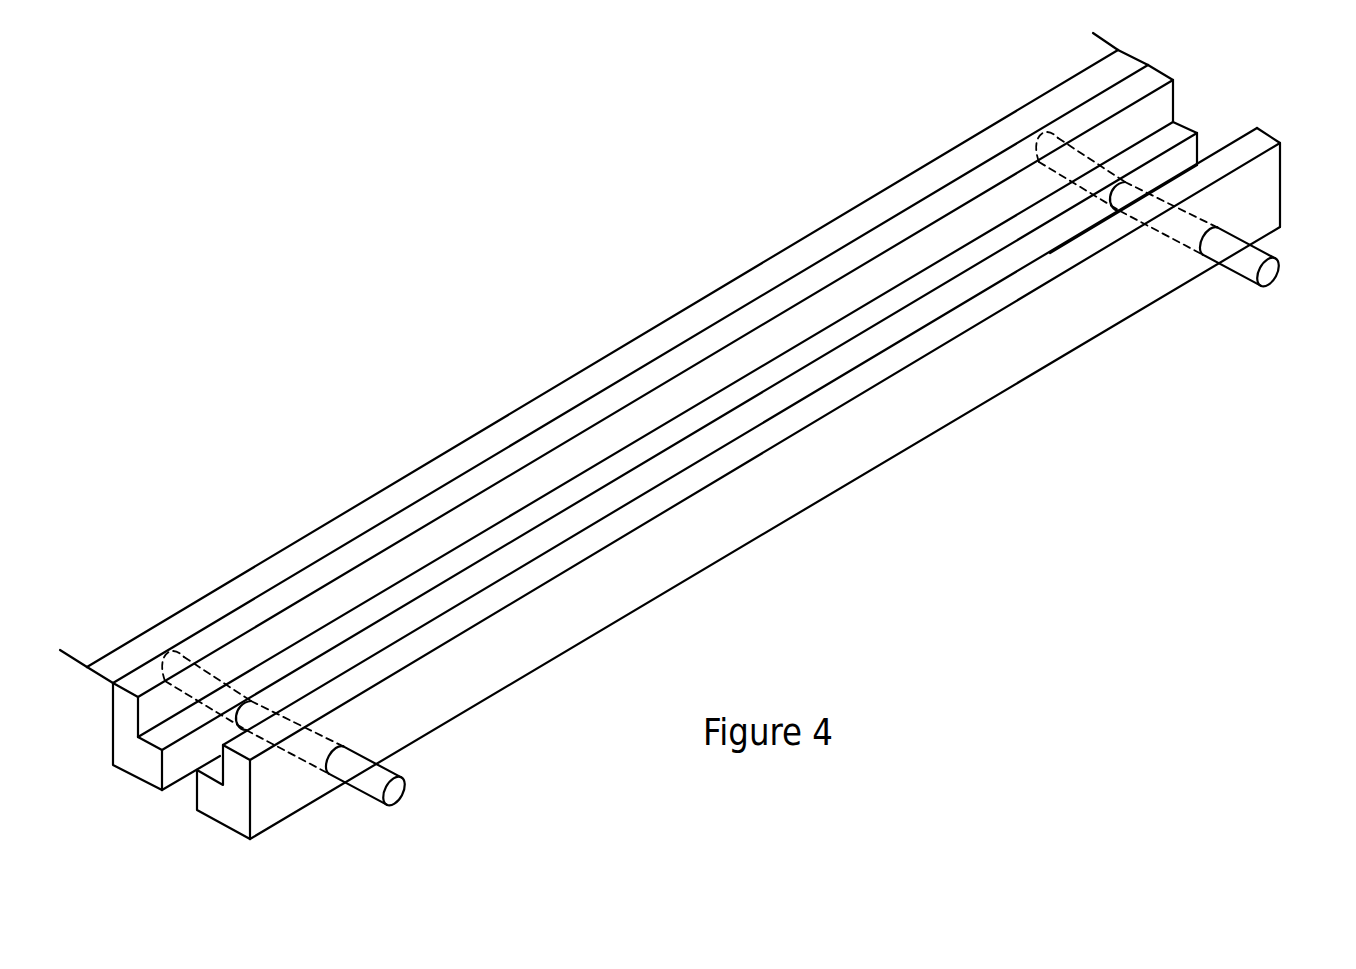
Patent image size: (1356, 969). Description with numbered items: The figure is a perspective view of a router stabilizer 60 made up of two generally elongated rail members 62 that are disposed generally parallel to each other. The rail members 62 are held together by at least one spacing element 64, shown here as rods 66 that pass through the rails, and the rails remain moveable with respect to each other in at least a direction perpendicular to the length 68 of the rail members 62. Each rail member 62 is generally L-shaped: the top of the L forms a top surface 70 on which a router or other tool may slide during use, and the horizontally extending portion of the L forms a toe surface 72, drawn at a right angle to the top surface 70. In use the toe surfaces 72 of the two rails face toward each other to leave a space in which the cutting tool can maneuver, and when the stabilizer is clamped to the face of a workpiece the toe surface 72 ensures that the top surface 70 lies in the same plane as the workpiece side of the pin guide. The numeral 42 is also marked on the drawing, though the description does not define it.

The shelf surface 42 is at (313, 638).
The router stabilizer 60 is at (978, 460).
The rail member 62 is at (500, 455).
The spacing element 64 is at (387, 810).
The rod 66 is at (400, 775).
The length 68 is at (815, 228).
The top surface 70 is at (668, 363).
The toe surface 72 is at (162, 737).